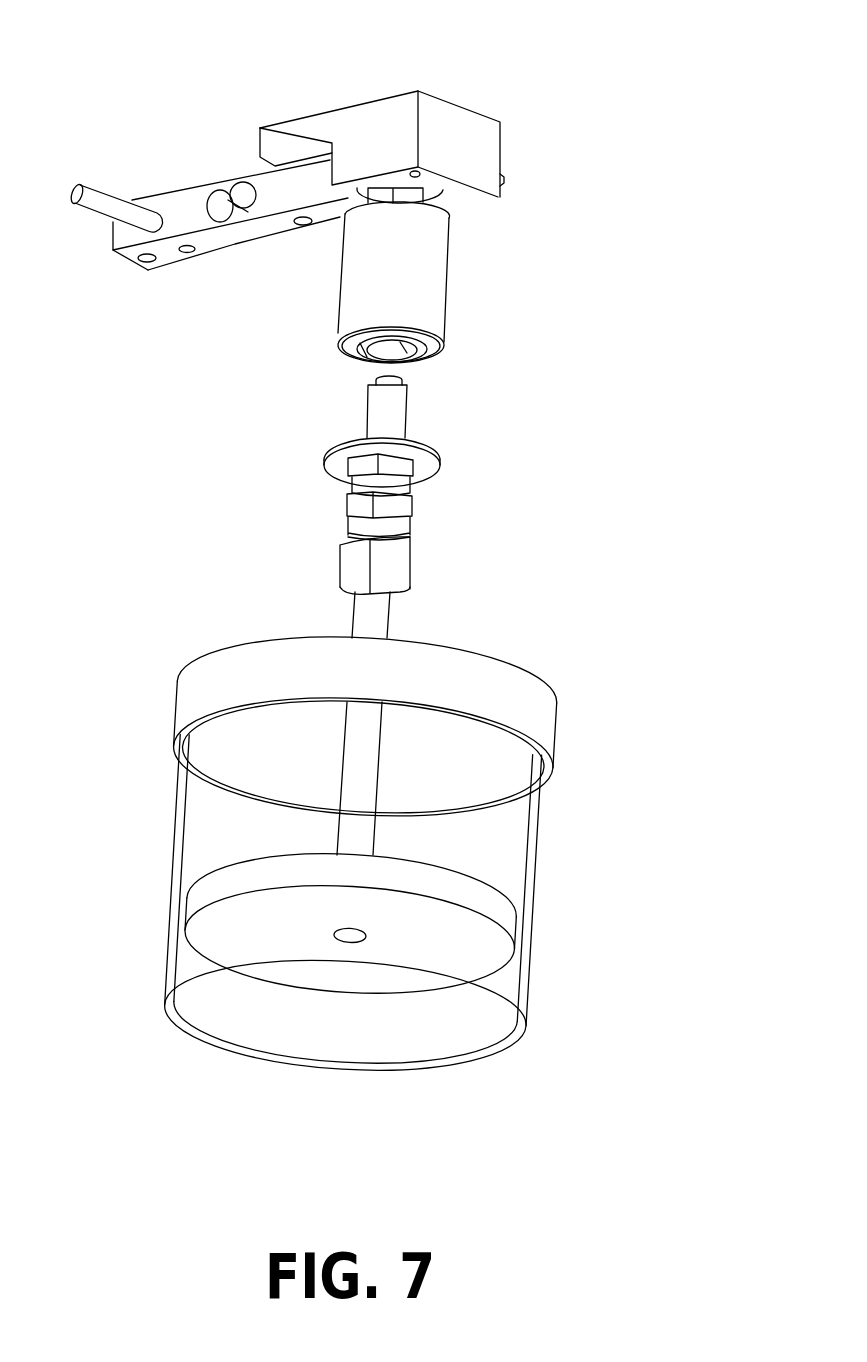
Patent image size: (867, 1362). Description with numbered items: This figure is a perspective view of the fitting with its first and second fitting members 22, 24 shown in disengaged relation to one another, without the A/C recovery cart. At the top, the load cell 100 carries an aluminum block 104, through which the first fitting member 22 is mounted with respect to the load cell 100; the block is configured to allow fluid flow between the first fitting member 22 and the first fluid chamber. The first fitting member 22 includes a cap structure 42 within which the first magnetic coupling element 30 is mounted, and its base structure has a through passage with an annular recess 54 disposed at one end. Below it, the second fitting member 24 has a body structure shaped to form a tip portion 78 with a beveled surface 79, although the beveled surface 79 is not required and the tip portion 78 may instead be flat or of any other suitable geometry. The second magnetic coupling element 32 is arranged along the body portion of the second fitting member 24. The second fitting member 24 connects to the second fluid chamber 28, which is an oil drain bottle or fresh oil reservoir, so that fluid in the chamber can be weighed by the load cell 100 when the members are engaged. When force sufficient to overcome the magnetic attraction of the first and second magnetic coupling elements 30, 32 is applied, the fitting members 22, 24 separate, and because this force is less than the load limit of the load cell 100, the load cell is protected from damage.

The load cell 100 is at (167, 208).
The aluminum block 104 is at (468, 108).
The first fitting member 22 is at (427, 192).
The cap structure 42 is at (392, 283).
The annular recess 54 is at (343, 372).
The first magnetic coupling element 30 is at (416, 366).
The second fitting member 24 is at (439, 613).
The beveled surface 79 is at (373, 375).
The tip portion 78 is at (367, 405).
The second magnetic coupling element 32 is at (440, 457).
The second fluid chamber 28 is at (540, 850).